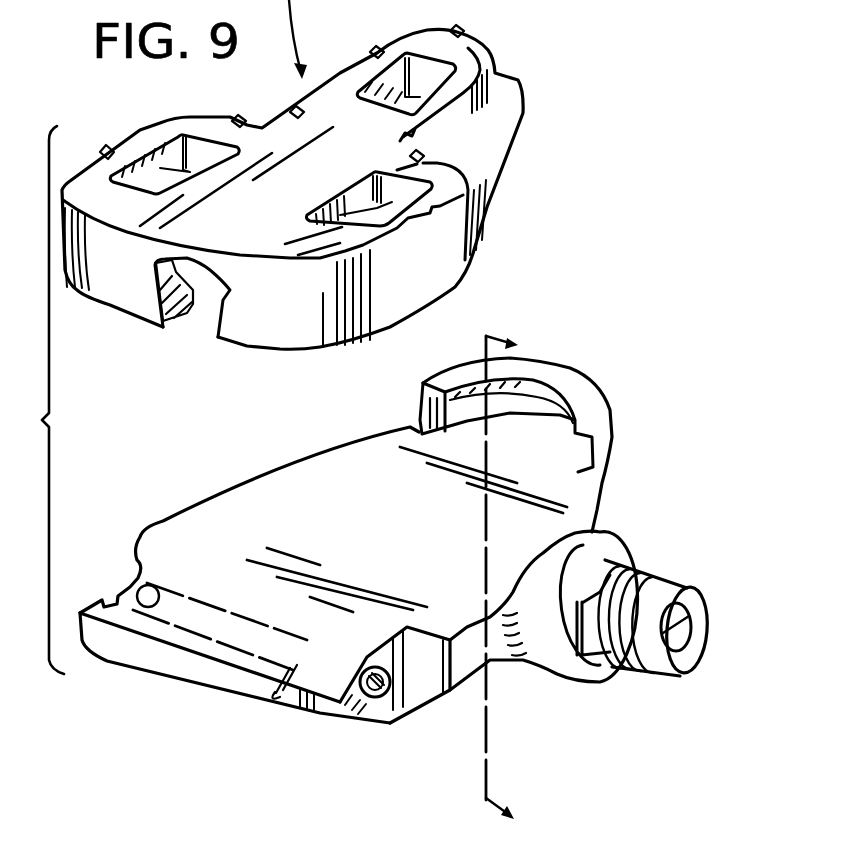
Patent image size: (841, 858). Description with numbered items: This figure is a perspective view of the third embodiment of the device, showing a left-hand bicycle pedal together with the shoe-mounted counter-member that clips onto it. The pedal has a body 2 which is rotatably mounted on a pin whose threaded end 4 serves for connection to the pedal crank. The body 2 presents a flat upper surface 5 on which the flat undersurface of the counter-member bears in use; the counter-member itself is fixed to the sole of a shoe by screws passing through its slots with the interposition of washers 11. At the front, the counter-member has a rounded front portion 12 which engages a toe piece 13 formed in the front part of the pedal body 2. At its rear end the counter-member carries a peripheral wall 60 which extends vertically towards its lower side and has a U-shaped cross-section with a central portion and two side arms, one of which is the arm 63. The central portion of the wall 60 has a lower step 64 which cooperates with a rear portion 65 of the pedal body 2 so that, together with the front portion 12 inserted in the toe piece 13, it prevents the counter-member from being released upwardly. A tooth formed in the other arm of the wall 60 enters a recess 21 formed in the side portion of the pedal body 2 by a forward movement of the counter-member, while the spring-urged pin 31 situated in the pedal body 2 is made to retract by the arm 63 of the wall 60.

The pedal body 2 is at (610, 480).
The threaded end 4 is at (650, 588).
The flat upper surface 5 is at (310, 477).
The washer 11 is at (480, 573).
The rounded front portion 12 is at (507, 80).
The toe piece 13 is at (563, 375).
The recess 21 is at (113, 600).
The pin 31 is at (388, 728).
The peripheral wall 60 is at (303, 357).
The side arm 63 is at (423, 283).
The lower step 64 is at (193, 306).
The rear portion 65 is at (143, 627).